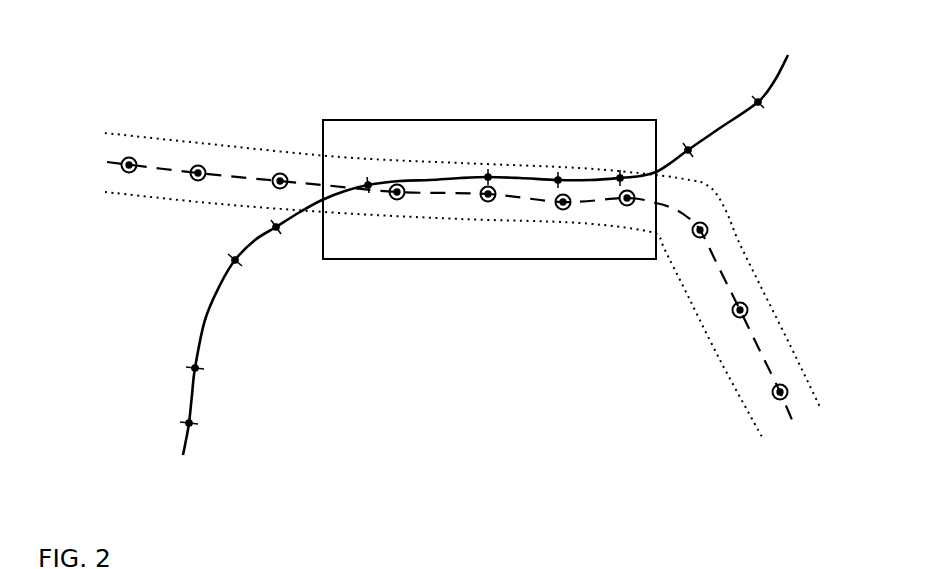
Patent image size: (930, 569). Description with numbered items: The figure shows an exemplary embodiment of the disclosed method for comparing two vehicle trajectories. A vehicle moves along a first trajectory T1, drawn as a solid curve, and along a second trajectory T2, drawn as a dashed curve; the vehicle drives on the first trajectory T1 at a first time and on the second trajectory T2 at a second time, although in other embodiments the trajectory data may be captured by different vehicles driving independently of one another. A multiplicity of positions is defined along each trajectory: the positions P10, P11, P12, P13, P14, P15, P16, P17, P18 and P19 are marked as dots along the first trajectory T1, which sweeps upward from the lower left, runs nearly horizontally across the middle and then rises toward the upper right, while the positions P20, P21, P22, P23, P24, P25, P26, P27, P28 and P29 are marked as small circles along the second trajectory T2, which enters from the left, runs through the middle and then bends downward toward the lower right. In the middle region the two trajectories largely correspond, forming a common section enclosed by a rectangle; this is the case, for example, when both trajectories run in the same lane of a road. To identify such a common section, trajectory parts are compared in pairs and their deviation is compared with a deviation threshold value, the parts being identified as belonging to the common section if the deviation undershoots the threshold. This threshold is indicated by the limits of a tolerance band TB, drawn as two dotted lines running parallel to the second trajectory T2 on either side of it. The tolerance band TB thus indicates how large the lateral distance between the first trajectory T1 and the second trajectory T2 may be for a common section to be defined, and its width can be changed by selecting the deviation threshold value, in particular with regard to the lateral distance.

The first trajectory T1 is at (189, 440).
The second trajectory T2 is at (785, 414).
The tolerance band TB is at (155, 134).
The position P10 is at (189, 423).
The position P11 is at (195, 368).
The position P12 is at (235, 260).
The position P13 is at (276, 227).
The position P14 is at (368, 185).
The position P15 is at (488, 177).
The position P16 is at (558, 180).
The position P17 is at (620, 178).
The position P18 is at (688, 150).
The position P19 is at (758, 102).
The position P20 is at (129, 165).
The position P21 is at (198, 173).
The position P22 is at (280, 181).
The position P23 is at (397, 192).
The position P24 is at (488, 194).
The position P25 is at (563, 202).
The position P26 is at (627, 198).
The position P27 is at (700, 230).
The position P28 is at (740, 310).
The position P29 is at (780, 392).